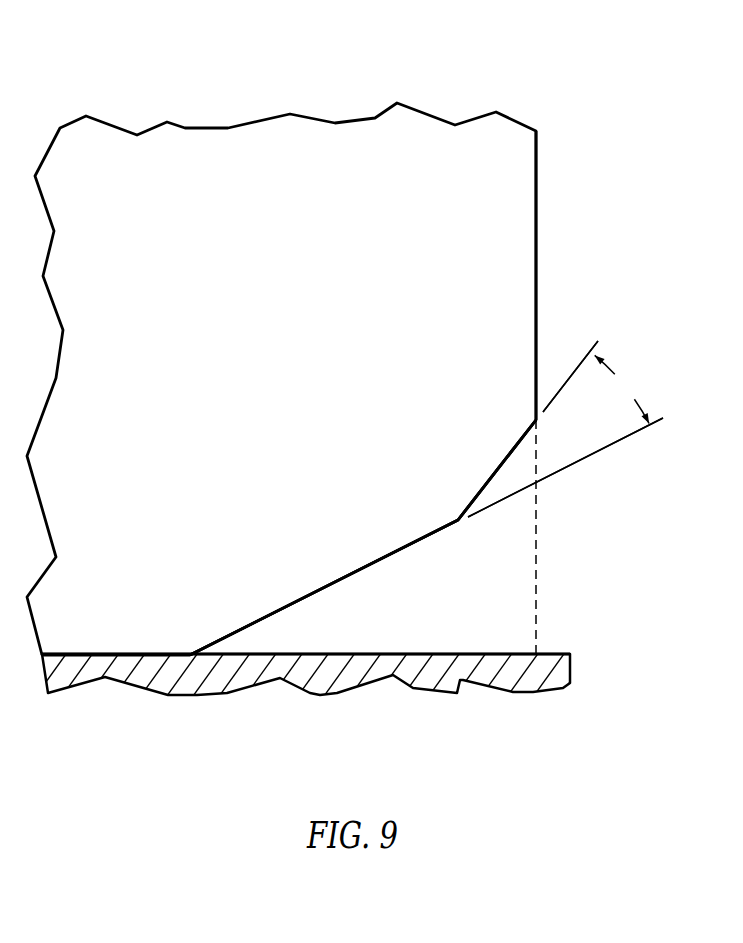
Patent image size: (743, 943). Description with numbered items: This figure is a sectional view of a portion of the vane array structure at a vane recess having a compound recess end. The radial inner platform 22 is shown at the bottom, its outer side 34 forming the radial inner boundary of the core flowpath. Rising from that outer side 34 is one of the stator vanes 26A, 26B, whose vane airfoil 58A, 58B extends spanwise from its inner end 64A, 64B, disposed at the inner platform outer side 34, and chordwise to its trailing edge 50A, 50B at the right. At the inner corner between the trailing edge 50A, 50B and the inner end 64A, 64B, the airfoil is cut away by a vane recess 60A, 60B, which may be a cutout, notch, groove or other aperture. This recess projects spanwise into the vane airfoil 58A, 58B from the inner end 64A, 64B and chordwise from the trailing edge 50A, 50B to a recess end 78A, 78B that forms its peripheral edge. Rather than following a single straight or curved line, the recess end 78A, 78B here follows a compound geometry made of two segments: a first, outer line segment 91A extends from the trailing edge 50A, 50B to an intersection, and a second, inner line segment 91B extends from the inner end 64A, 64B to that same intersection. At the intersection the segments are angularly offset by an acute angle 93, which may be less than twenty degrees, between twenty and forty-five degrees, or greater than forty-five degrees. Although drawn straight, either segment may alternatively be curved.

The radial inner platform 22 is at (64, 707).
The stator vane 26A is at (305, 336).
The stator vane 26B is at (521, 107).
The outer side of the inner platform 34 is at (91, 654).
The trailing edge 50A is at (610, 275).
The trailing edge 50B is at (537, 173).
The vane airfoil 58A is at (281, 379).
The vane airfoil 58B is at (277, 332).
The vane recess 60A is at (238, 689).
The vane recess 60B is at (382, 648).
The inner end of the vane airfoil 64A is at (306, 699).
The inner end of the vane airfoil 64B is at (147, 656).
The recess end 78A is at (420, 537).
The recess end 78B is at (444, 553).
The first line segment 91A is at (504, 464).
The second line segment 91B is at (350, 576).
The acute angle 93 is at (565, 497).